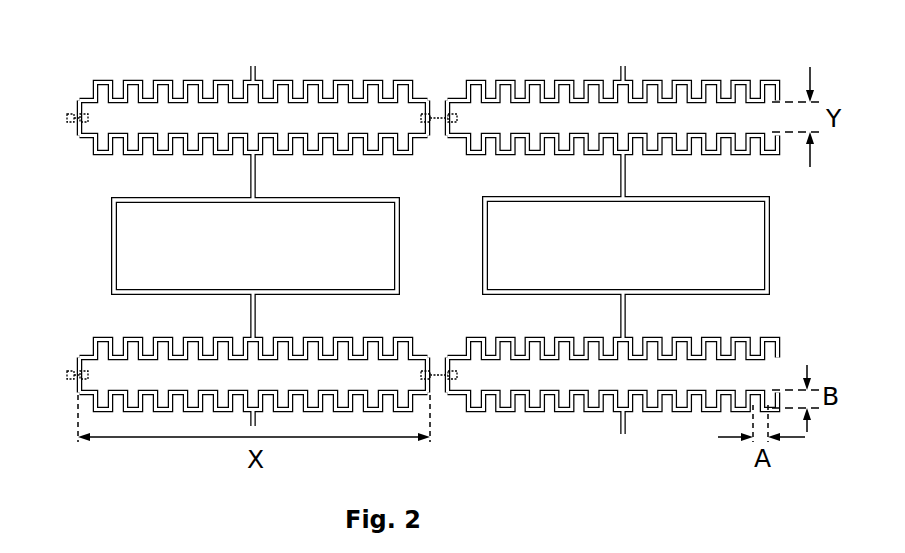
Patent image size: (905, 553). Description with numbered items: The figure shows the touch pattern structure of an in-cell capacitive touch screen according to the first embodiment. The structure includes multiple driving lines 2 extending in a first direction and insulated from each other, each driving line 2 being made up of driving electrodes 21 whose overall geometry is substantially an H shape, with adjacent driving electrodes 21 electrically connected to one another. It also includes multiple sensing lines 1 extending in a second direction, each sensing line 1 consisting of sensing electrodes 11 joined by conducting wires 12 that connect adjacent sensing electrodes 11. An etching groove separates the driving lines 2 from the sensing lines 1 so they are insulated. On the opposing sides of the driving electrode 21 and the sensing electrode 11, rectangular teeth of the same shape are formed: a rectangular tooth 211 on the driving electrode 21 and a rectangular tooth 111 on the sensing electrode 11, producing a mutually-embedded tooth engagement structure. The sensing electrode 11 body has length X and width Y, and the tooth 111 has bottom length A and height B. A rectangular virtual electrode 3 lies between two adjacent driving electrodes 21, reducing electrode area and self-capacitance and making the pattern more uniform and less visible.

The sensing line 1 is at (229, 116).
The sensing electrode 11 is at (122, 127).
The rectangular tooth 111 is at (133, 88).
The conducting wire 12 is at (437, 108).
The driving line 2 is at (607, 85).
The driving electrode 21 is at (440, 167).
The rectangular tooth 211 is at (487, 88).
The virtual electrode 3 is at (132, 237).